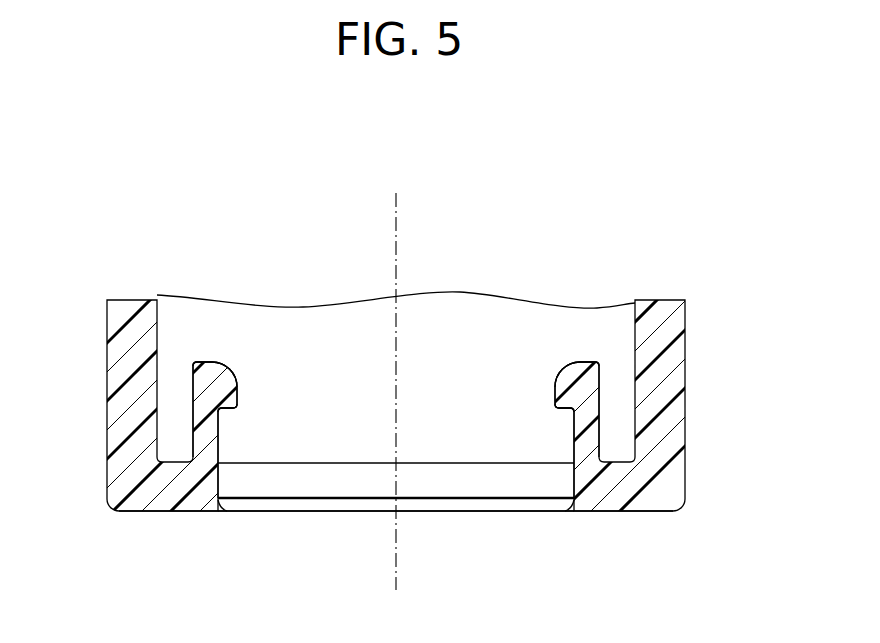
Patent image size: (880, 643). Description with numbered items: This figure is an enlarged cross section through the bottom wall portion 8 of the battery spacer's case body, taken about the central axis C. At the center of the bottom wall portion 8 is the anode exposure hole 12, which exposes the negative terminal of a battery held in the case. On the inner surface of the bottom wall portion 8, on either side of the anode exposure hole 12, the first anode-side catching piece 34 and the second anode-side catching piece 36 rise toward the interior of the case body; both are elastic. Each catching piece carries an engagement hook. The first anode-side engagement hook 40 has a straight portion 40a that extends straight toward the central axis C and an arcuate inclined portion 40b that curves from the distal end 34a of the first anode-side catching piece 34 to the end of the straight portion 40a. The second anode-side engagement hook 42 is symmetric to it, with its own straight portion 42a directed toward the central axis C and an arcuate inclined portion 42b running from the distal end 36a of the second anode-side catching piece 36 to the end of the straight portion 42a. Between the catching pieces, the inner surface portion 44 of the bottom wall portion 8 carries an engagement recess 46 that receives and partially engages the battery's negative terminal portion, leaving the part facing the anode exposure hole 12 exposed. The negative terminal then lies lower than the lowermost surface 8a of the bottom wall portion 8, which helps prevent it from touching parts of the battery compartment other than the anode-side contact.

The bottom wall portion 8 is at (676, 506).
The lowermost surface 8a is at (450, 511).
The anode exposure hole 12 is at (225, 511).
The first anode-side catching piece 34 is at (203, 417).
The distal end of the first anode-side catching piece 34a is at (218, 352).
The second anode-side catching piece 36 is at (592, 416).
The distal end of the second anode-side catching piece 36a is at (574, 360).
The first anode-side engagement hook 40 is at (222, 388).
The straight portion 40a is at (228, 408).
The arcuate inclined portion 40b is at (223, 388).
The second anode-side engagement hook 42 is at (565, 390).
The straight portion 42a is at (563, 413).
The arcuate inclined portion 42b is at (558, 382).
The inner surface portion 44 is at (412, 463).
The engagement recess 46 is at (340, 498).
The central axis C is at (397, 223).